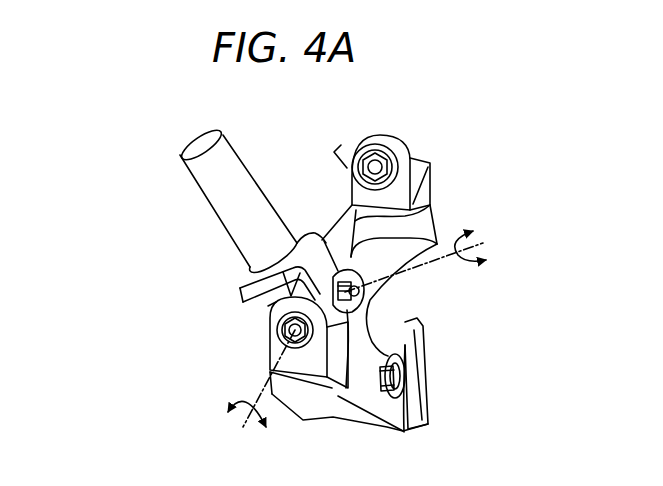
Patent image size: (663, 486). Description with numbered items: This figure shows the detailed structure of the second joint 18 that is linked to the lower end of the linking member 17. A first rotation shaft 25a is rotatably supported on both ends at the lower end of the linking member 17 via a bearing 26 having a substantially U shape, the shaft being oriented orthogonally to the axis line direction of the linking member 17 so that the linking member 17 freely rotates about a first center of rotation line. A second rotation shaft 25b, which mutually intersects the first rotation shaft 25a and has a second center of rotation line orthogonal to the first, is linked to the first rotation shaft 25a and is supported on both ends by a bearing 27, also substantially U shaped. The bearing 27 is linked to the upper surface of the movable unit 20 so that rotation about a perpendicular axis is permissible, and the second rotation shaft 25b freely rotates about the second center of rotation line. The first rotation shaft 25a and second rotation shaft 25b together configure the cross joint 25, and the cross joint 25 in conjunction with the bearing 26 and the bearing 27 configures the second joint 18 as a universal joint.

The linking member 17 is at (230, 197).
The second joint 18 is at (276, 170).
The movable unit 20 is at (343, 403).
The cross joint 25 is at (165, 276).
The first rotation shaft 25a is at (332, 289).
The second rotation shaft 25b is at (268, 308).
The bearing 26 is at (252, 277).
The bearing 27 is at (278, 338).